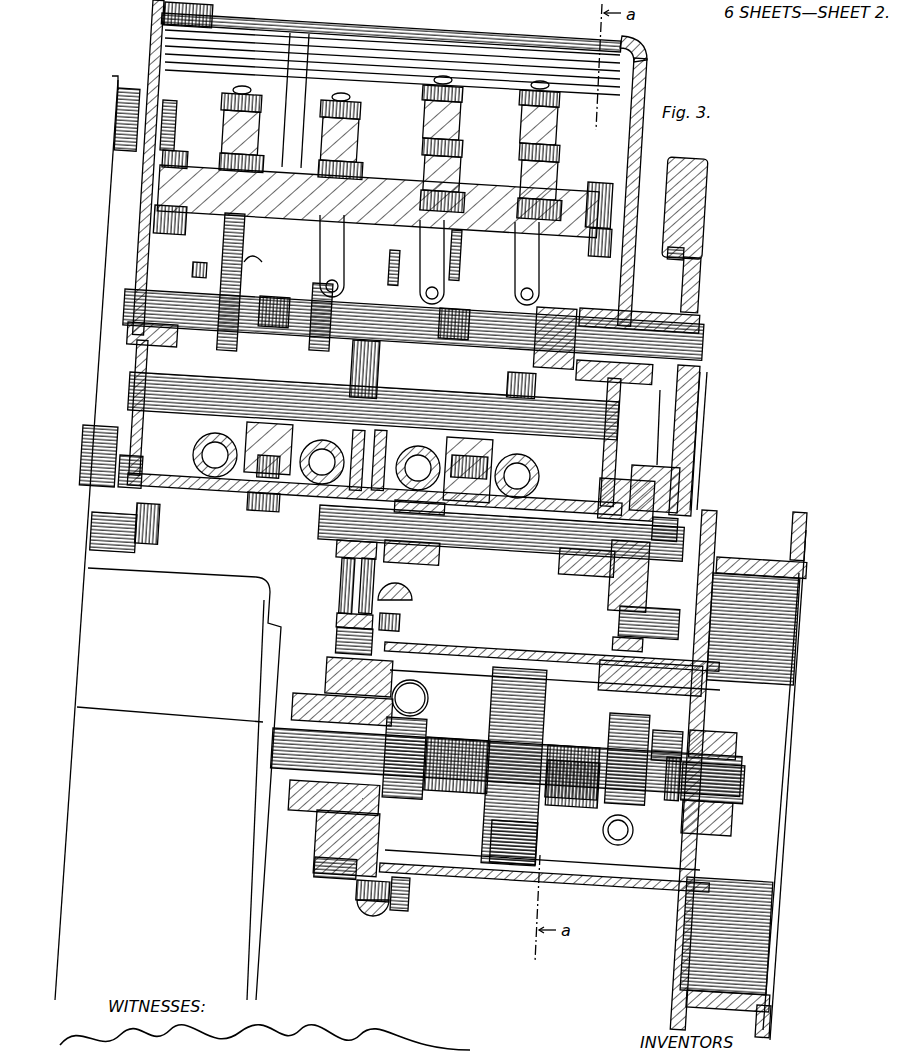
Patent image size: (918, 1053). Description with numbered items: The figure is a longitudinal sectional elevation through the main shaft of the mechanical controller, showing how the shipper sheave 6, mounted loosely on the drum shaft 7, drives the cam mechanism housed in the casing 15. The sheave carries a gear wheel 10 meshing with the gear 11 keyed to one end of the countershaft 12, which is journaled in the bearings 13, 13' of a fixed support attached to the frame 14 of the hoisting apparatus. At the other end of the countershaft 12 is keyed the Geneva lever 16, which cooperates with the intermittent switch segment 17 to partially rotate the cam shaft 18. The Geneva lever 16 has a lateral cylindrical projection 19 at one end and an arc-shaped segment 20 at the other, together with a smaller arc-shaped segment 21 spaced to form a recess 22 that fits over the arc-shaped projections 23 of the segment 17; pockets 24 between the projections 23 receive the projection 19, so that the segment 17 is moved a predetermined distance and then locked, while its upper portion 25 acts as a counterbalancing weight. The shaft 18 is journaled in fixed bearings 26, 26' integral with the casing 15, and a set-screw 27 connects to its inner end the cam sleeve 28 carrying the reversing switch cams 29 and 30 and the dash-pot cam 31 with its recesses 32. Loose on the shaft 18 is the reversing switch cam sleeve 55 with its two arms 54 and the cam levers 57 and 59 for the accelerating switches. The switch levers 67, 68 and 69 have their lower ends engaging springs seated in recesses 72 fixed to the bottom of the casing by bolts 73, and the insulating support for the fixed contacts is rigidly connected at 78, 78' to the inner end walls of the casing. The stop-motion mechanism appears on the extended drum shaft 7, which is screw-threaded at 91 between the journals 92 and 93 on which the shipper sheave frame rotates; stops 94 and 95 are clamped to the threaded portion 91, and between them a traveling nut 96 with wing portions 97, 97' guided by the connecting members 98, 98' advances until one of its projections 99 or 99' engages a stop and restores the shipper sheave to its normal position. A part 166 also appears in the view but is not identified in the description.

The shipper sheave 6 is at (745, 558).
The drum shaft 7 is at (746, 790).
The gear wheel 10 is at (322, 878).
The gear 11 is at (337, 598).
The countershaft 12 is at (503, 550).
The bearing 13 is at (414, 546).
The bearing 13' is at (586, 579).
The frame 14 is at (78, 560).
The casing 15 is at (640, 148).
The Geneva lever 16 is at (648, 584).
The intermittent switch segment 17 is at (700, 290).
The cam shaft 18 is at (704, 350).
The lateral cylindrical projection 19 is at (660, 612).
The arc-shaped laterally projecting segment 20 is at (683, 520).
The arc-shaped segment 21 is at (657, 458).
The arc-shaped recess 22 is at (652, 472).
The arc-shaped projections 23 is at (682, 480).
The pockets 24 is at (698, 432).
The upper portion of the segment 25 is at (703, 226).
The fixed bearing 26 is at (152, 299).
The fixed bearing 26' is at (639, 303).
The set-screw 27 is at (200, 268).
The cam sleeve 28 is at (310, 290).
The reversing switch cam 29 is at (248, 256).
The reversing switch cam 30 is at (348, 372).
The dash-pot cam 31 is at (272, 428).
The recesses 32 is at (265, 430).
The arms 54 is at (393, 264).
The reversing switch cam sleeve 55 is at (470, 305).
The cam lever 57 is at (438, 300).
The cam lever 59 is at (550, 312).
The switch lever 67 is at (336, 264).
The switch lever 68 is at (442, 264).
The switch lever 69 is at (533, 282).
The recesses 72 is at (193, 452).
The bolts 73 is at (540, 476).
The rigid connection 78 is at (356, 163).
The rigid connection 78' is at (625, 216).
The screw-threaded portion 91 is at (590, 752).
The journal 92 is at (330, 795).
The journal 93 is at (735, 792).
The stop 94 is at (430, 738).
The stop 95 is at (622, 730).
The traveling nut 96 is at (540, 735).
The wing portion 97 is at (517, 745).
The wing portion 97' is at (508, 870).
The connecting member 98 is at (552, 658).
The connecting member 98' is at (544, 886).
The projection 99 is at (507, 771).
The projection 99' is at (572, 791).
The collar 166 is at (246, 268).